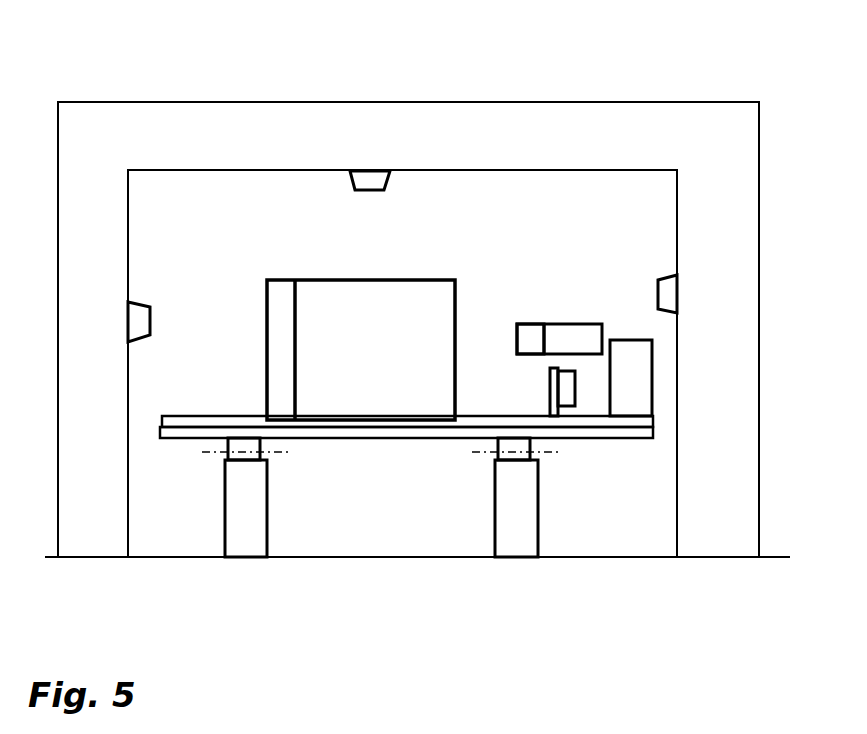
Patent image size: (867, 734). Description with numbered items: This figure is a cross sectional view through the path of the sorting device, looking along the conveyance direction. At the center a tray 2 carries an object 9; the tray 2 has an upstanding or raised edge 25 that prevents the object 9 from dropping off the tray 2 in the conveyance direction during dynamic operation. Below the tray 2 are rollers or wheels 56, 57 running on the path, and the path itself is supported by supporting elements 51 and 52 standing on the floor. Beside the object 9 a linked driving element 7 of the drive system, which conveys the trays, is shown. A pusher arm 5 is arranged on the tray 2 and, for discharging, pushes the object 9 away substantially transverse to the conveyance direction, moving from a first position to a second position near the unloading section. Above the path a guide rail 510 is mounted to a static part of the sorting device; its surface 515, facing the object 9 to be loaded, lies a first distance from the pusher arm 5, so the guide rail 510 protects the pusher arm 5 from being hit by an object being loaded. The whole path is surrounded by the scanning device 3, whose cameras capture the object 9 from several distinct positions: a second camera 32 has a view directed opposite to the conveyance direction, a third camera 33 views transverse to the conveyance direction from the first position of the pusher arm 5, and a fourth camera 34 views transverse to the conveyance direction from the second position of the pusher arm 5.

The scanning device 3 is at (233, 133).
The third camera 33 is at (376, 184).
The second camera 32 is at (148, 318).
The fourth camera 34 is at (658, 290).
The raised edge 25 is at (196, 422).
The tray 2 is at (363, 433).
The object 9 is at (367, 302).
The guide rail 510 is at (532, 333).
The surface of the guide rail 515 is at (518, 338).
The pusher arm 5 is at (553, 393).
The driving element 7 is at (630, 398).
The roller or wheel 56 is at (228, 452).
The supporting element 51 is at (242, 535).
The roller or wheel 57 is at (500, 452).
The supporting element 52 is at (518, 538).